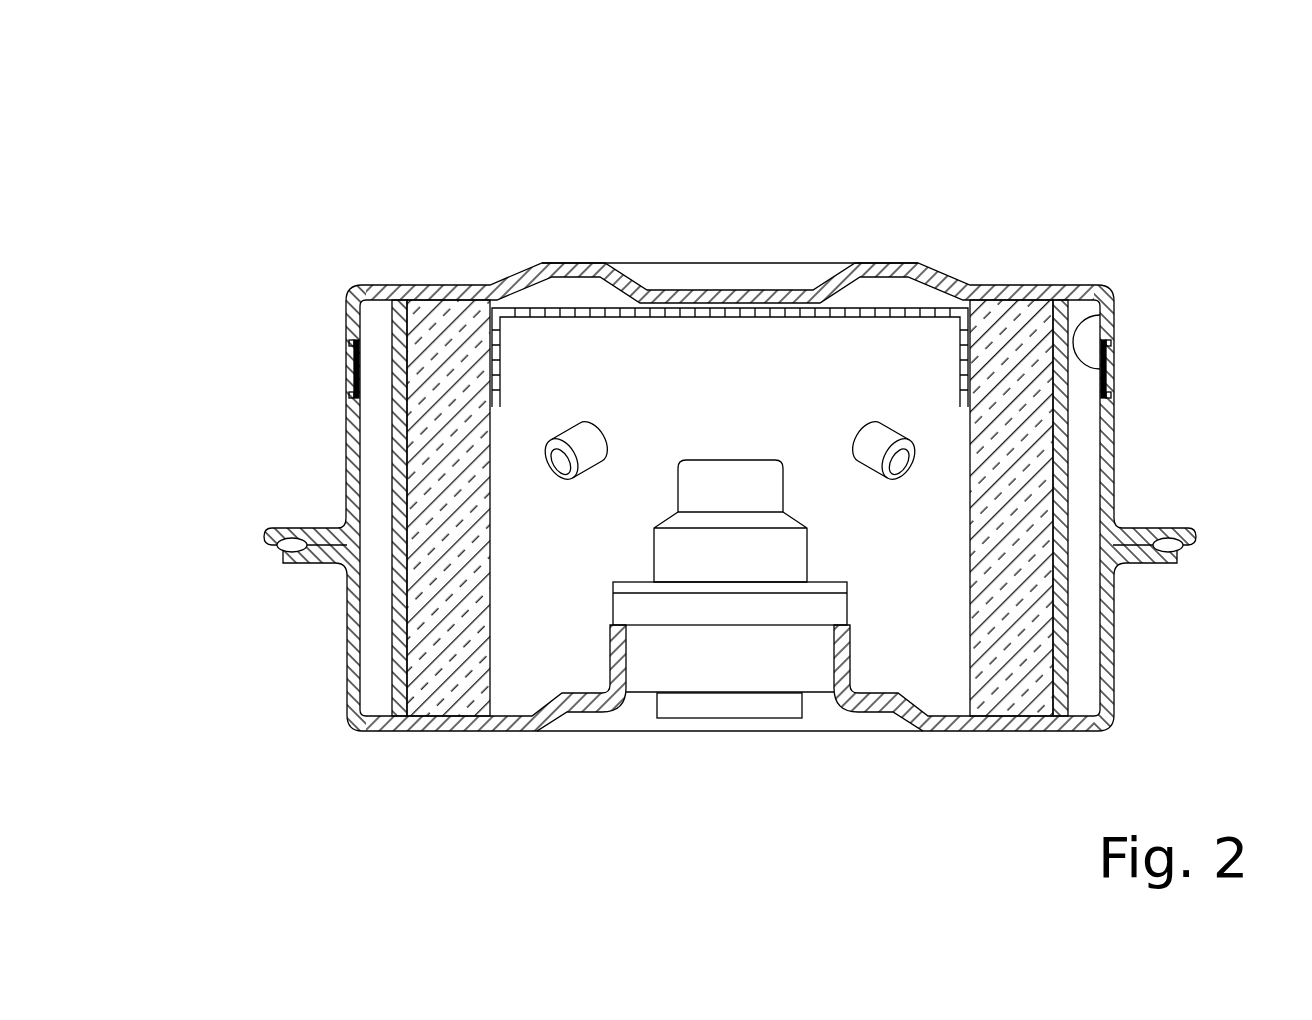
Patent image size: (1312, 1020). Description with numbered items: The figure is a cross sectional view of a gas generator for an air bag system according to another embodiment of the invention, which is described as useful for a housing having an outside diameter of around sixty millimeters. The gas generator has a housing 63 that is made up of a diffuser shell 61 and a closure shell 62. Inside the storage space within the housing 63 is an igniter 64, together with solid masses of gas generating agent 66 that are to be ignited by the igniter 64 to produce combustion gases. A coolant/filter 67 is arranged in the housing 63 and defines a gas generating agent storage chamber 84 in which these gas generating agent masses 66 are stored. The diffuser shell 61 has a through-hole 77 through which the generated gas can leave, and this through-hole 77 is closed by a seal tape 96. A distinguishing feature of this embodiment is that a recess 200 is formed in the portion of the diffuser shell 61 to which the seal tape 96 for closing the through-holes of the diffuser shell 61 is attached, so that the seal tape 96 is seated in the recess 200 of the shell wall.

The diffuser shell 61 is at (1027, 279).
The closure shell 62 is at (473, 735).
The housing 63 is at (939, 231).
The igniter 64 is at (703, 733).
The solid masses of gas generating agent 66 is at (607, 437).
The coolant/filter 67 is at (964, 662).
The through-hole 77 is at (343, 363).
The gas generating agent storage chamber 84 is at (785, 371).
The seal tape 96 is at (1115, 305).
The recess 200 is at (346, 431).